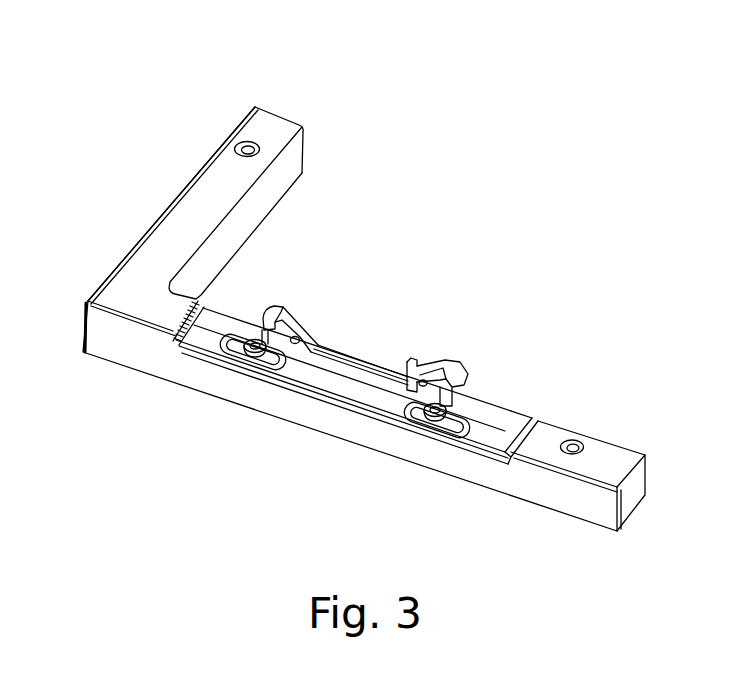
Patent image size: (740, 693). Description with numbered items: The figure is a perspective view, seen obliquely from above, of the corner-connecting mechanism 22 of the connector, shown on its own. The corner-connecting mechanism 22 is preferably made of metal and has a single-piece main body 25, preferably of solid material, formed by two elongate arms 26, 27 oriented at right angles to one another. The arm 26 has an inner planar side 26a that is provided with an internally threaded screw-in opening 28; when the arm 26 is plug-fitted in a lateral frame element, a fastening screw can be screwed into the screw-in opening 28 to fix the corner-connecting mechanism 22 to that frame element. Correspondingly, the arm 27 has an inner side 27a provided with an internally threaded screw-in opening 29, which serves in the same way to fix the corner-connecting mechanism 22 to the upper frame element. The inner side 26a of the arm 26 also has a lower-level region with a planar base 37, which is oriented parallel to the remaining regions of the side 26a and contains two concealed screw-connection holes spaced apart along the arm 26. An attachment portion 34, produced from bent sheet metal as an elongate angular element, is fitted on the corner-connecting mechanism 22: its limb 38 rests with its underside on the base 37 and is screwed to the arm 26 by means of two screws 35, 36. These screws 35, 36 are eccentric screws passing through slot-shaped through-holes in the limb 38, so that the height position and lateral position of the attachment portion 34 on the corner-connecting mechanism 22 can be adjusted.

The corner-connecting mechanism 22 is at (340, 307).
The main body 25 is at (177, 388).
The arm 26 is at (371, 449).
The inner planar side 26a is at (582, 414).
The arm 27 is at (239, 183).
The inner side 27a is at (168, 232).
The screw-in opening 28 is at (583, 442).
The screw-in opening 29 is at (242, 146).
The attachment portion 34 is at (382, 335).
The screw 35 is at (437, 416).
The screw 36 is at (255, 352).
The base 37 is at (498, 425).
The limb 38 is at (328, 406).